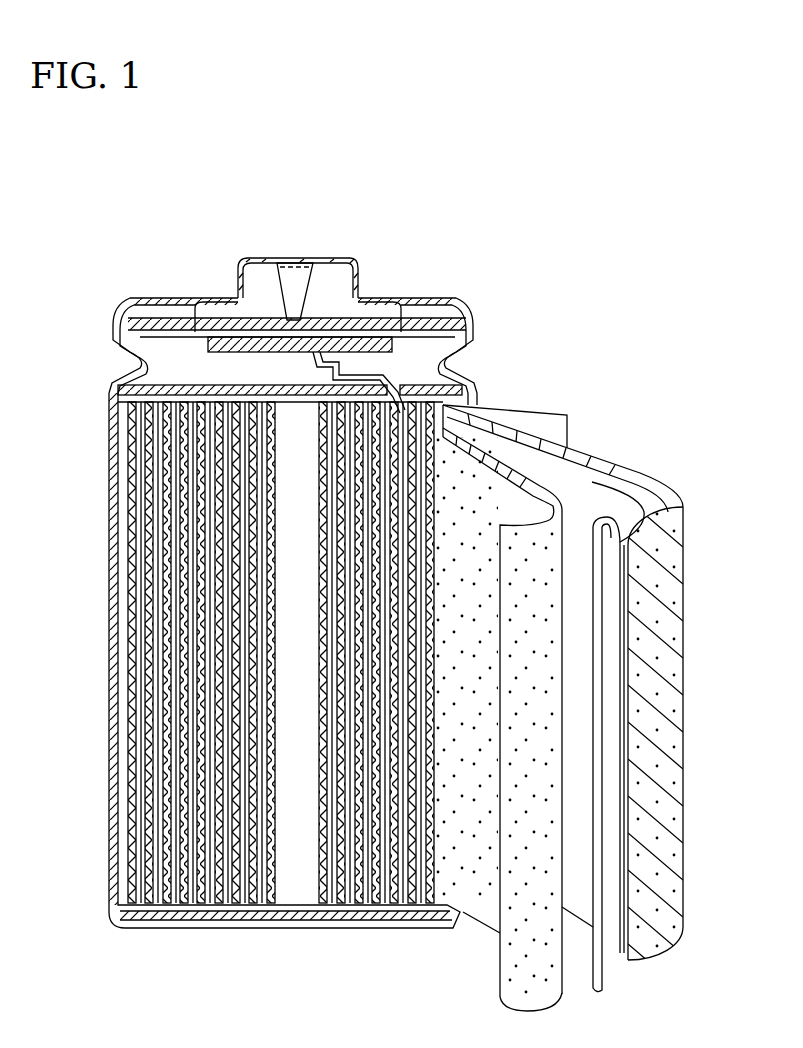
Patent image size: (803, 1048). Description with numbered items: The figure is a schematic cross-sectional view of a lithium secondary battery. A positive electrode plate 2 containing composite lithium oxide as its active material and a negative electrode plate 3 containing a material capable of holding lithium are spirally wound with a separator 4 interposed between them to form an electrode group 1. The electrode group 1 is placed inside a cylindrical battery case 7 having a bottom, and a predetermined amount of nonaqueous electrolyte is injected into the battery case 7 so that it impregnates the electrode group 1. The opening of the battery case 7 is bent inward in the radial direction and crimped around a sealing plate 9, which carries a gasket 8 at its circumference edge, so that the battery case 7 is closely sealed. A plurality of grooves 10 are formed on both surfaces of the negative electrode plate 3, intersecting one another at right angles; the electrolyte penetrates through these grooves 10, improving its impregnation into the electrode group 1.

The electrode group 1 is at (698, 442).
The positive electrode plate 2 is at (513, 493).
The negative electrode plate 3 is at (633, 470).
The separator 4 is at (592, 497).
The battery case 7 is at (110, 620).
The gasket 8 is at (453, 310).
The sealing plate 9 is at (258, 345).
The grooves 10 is at (670, 504).